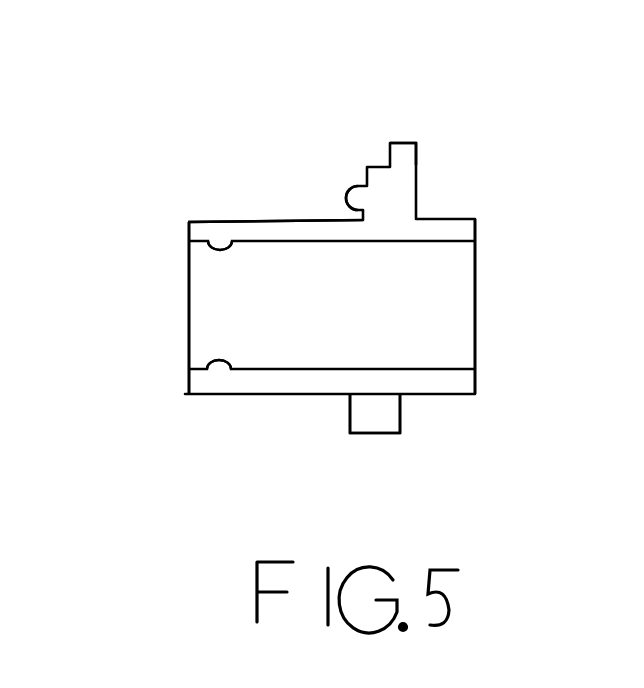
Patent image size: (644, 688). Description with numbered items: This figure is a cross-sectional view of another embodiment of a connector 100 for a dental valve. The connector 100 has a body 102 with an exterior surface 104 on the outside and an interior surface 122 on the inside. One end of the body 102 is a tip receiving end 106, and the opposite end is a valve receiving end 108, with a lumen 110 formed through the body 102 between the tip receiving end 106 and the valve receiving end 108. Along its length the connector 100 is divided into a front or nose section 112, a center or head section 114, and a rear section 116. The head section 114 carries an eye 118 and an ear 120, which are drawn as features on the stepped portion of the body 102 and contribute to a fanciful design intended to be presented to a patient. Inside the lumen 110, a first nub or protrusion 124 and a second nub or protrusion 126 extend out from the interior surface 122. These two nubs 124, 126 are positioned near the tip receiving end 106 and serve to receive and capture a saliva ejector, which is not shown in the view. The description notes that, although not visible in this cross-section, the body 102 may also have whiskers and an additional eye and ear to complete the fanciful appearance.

The connector 100 is at (290, 115).
The body 102 is at (463, 184).
The exterior surface 104 is at (238, 218).
The tip receiving end 106 is at (166, 297).
The valve receiving end 108 is at (509, 300).
The lumen 110 is at (316, 327).
The nose section 112 is at (273, 230).
The head section 114 is at (377, 418).
The rear section 116 is at (457, 382).
The eye 118 is at (358, 193).
The ear 120 is at (403, 152).
The interior surface 122 is at (343, 237).
The first nub 124 is at (223, 247).
The second nub 126 is at (218, 358).